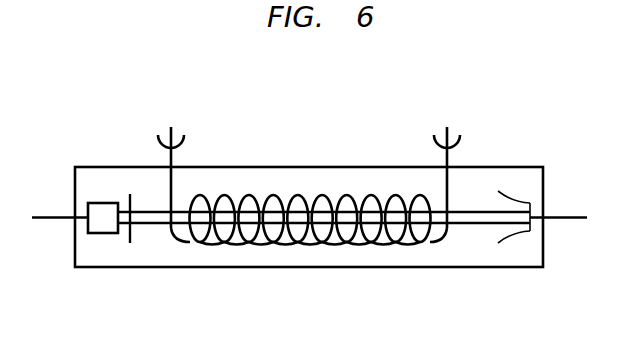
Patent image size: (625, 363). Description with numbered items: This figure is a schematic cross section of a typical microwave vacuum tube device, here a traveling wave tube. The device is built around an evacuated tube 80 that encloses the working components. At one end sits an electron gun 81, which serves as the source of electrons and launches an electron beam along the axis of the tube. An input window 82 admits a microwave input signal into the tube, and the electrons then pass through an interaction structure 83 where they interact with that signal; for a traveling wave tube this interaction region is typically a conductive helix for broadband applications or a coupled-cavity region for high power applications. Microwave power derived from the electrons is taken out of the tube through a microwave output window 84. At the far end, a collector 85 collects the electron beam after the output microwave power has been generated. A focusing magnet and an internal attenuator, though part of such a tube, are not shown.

The evacuated tube 80 is at (292, 167).
The electron gun 81 is at (88, 231).
The input window 82 is at (177, 128).
The interaction structure 83 is at (445, 282).
The microwave output window 84 is at (453, 128).
The collector 85 is at (543, 208).